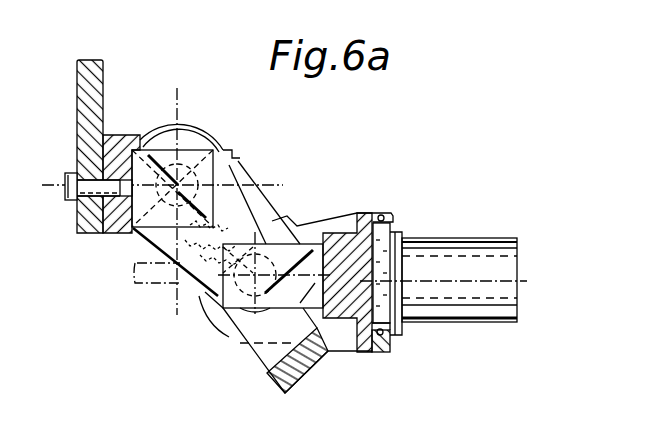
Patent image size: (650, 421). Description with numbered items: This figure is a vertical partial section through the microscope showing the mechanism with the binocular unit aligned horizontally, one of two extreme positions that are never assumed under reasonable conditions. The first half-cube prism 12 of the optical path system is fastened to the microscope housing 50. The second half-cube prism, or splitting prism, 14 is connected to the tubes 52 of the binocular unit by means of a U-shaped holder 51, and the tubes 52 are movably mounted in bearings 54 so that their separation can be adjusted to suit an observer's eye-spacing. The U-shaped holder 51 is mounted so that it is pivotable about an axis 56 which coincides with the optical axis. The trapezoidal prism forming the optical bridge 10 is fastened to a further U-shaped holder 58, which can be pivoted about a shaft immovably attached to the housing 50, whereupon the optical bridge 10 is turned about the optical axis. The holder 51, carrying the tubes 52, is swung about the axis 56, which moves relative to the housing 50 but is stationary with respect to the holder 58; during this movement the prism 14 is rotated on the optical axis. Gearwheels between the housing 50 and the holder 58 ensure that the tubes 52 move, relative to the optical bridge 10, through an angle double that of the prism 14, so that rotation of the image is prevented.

The microscope housing 50 is at (92, 74).
The first half-cube prism 12 is at (128, 236).
The optical bridge 10 is at (187, 150).
The axis 56 is at (271, 221).
The second half-cube prism 14 is at (233, 302).
The further U-shaped holder 58 is at (310, 369).
The U-shaped holder 51 is at (360, 352).
The bearings 54 is at (381, 212).
The tubes 52 is at (480, 300).